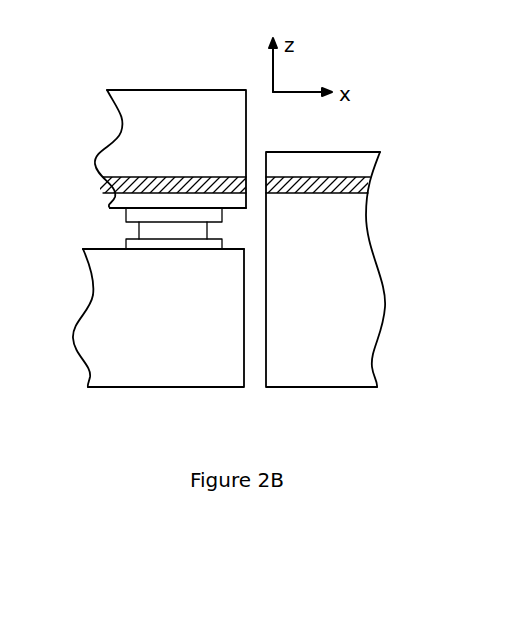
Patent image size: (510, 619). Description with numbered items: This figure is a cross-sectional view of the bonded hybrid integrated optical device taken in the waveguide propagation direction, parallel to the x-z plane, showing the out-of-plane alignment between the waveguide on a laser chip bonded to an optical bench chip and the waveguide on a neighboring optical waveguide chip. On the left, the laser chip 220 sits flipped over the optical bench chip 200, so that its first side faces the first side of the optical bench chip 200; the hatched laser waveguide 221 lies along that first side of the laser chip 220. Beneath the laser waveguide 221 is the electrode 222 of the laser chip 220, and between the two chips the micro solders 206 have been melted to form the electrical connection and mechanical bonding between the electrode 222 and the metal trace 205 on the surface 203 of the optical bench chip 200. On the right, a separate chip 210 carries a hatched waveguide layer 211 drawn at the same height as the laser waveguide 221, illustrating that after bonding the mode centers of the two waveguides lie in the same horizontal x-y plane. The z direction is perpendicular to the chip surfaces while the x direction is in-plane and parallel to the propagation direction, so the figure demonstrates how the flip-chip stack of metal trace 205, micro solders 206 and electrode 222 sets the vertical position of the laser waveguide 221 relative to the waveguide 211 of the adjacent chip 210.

The optical bench chip 200 is at (112, 280).
The surface of first substrate 203 is at (108, 250).
The metal trace 205 is at (140, 245).
The micro solders 206 is at (177, 232).
The second substrate 210 is at (348, 223).
The layer on second substrate 211 is at (280, 175).
The laser chip 220 is at (131, 107).
The laser waveguide 221 is at (163, 173).
The electrode 222 is at (134, 212).